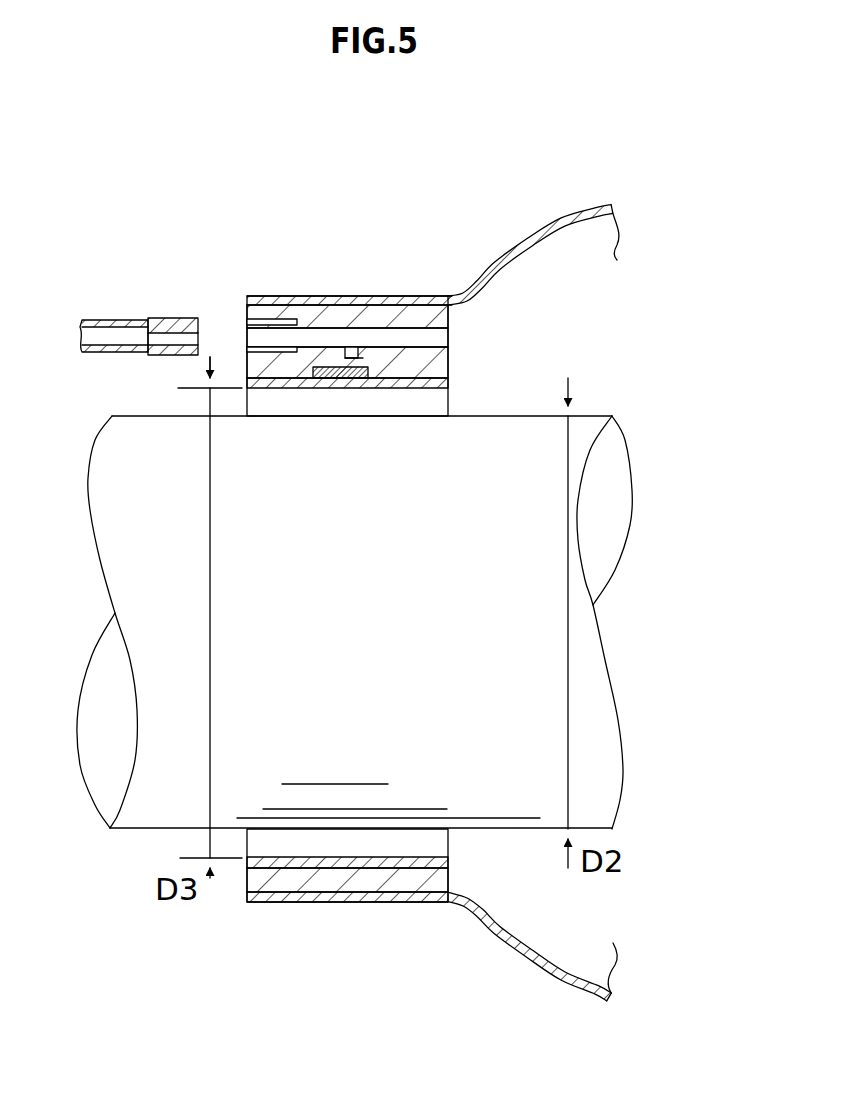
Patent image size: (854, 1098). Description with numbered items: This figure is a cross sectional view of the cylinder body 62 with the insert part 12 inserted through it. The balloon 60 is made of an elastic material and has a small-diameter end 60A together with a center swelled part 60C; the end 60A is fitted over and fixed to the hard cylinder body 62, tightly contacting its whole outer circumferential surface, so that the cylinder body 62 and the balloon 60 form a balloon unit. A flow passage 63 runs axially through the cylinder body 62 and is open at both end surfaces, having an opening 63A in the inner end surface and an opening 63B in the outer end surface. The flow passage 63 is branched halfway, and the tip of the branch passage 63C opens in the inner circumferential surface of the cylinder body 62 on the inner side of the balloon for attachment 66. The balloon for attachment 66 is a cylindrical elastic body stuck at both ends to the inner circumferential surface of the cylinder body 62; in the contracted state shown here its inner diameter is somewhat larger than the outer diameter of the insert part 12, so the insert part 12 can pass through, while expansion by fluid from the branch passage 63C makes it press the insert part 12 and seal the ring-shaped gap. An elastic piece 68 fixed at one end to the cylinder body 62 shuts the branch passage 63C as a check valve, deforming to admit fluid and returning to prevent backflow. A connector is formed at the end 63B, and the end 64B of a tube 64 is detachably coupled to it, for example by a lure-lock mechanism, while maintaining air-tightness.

The insert part 12 is at (592, 675).
The balloon 60 is at (433, 215).
The end of the balloon 60A is at (404, 296).
The center swelled part 60C is at (572, 207).
The cylinder body 62 is at (383, 349).
The flow passage 63 is at (308, 326).
The opening 63A is at (450, 332).
The opening 63B is at (246, 335).
The branch passage 63C is at (360, 372).
The tube 64 is at (139, 293).
The end of the tube 64B is at (175, 318).
The balloon for attachment 66 is at (282, 390).
The elastic piece 68 is at (339, 380).